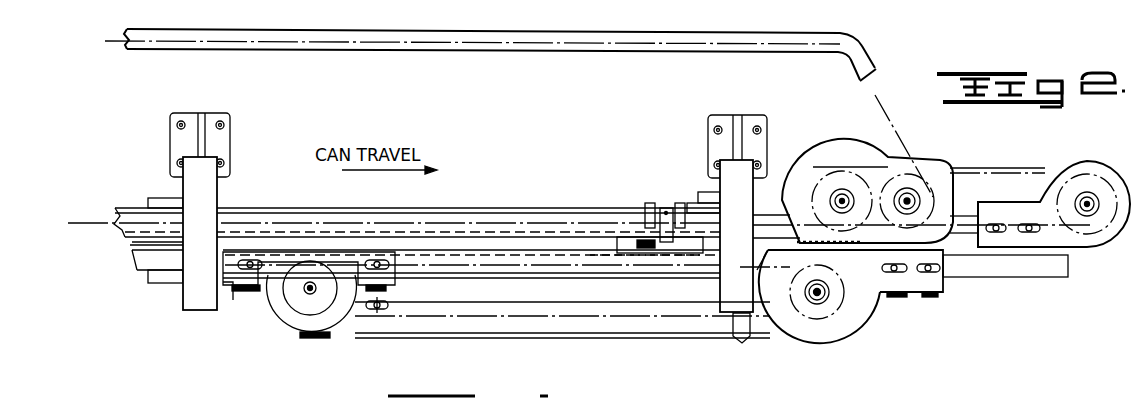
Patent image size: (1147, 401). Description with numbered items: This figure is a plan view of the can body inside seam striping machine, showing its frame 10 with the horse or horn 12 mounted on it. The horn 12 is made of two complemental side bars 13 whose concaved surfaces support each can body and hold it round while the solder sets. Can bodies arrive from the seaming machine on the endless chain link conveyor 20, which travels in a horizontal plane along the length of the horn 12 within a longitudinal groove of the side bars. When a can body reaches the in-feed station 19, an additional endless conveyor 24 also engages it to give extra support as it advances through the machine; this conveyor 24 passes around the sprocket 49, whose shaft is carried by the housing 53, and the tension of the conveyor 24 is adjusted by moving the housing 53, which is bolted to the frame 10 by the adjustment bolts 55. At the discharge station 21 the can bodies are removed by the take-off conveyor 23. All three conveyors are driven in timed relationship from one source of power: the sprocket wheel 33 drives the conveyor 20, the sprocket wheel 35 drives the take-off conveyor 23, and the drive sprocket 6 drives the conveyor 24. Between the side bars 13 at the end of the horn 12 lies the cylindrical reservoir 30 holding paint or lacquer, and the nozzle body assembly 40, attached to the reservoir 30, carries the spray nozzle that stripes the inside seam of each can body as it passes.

The drive sprocket 6 is at (827, 315).
The frame 10 is at (232, 166).
The horn 12 is at (140, 275).
The side bars 13 is at (133, 252).
The in-feed station 19 is at (257, 291).
The endless chain link conveyor 20 is at (872, 92).
The discharge station 21 is at (887, 299).
The take-off conveyor 23 is at (987, 175).
The endless conveyor 24 is at (441, 313).
The reservoir 30 is at (497, 230).
The sprocket wheel 33 is at (937, 197).
The sprocket wheel 35 is at (812, 190).
The nozzle body assembly 40 is at (627, 253).
The sprocket 49 is at (305, 313).
The housing 53 is at (283, 320).
The adjustment bolts 55 is at (393, 257).